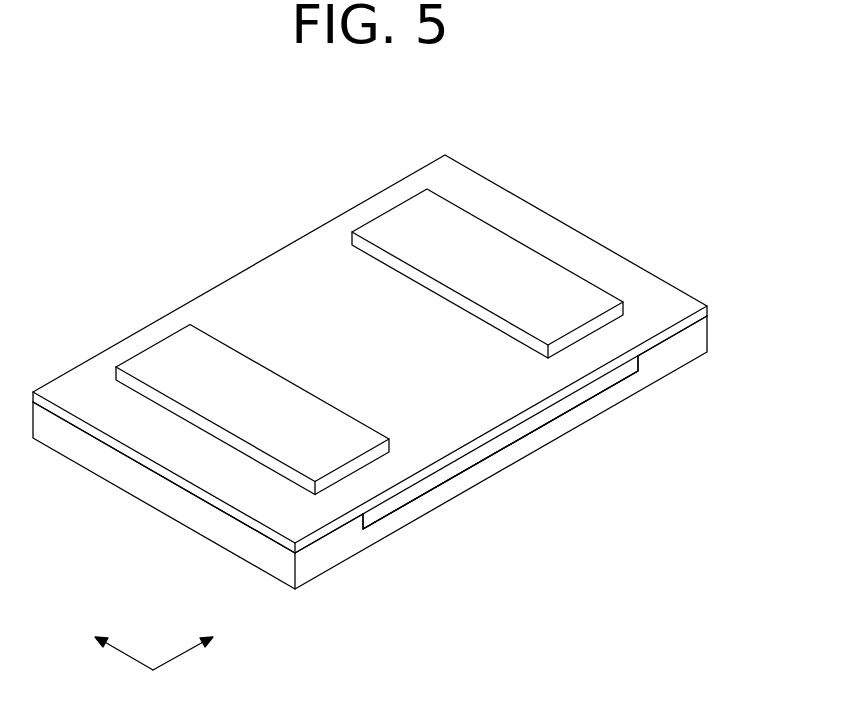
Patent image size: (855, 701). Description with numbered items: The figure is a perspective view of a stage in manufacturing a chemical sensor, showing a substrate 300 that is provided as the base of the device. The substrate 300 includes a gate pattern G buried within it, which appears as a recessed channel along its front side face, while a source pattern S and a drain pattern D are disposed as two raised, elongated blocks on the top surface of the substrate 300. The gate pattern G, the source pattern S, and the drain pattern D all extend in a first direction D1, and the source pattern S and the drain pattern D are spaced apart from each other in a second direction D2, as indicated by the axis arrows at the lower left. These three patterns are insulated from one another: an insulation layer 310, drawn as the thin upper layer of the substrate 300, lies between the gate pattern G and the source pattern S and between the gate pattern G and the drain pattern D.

The substrate 300 is at (697, 338).
The insulation layer 310 is at (707, 307).
The gate pattern G is at (505, 440).
The drain pattern D is at (400, 218).
The source pattern S is at (163, 353).
The first direction D1 is at (109, 643).
The second direction D2 is at (199, 643).